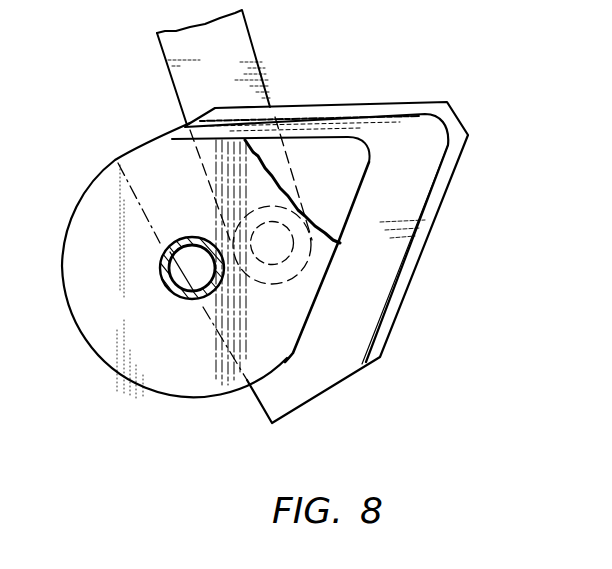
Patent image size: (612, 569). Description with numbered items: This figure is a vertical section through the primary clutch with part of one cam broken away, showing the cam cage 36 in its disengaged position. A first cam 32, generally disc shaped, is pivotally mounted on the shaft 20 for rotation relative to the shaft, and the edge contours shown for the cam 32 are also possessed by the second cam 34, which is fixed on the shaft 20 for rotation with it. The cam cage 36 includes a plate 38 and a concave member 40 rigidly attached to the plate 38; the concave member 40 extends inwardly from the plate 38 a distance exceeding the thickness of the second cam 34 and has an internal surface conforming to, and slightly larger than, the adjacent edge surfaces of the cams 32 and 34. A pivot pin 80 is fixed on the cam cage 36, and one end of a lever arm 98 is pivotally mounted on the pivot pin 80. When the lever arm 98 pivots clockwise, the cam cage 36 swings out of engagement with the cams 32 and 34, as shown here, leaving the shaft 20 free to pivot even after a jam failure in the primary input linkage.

The shaft 20 is at (207, 303).
The first cam 32 is at (207, 400).
The second cam 34 is at (332, 157).
The cam cage 36 is at (339, 252).
The plate 38 is at (327, 376).
The concave member 40 is at (391, 313).
The pivot pin 80 is at (280, 258).
The lever arm 98 is at (262, 56).